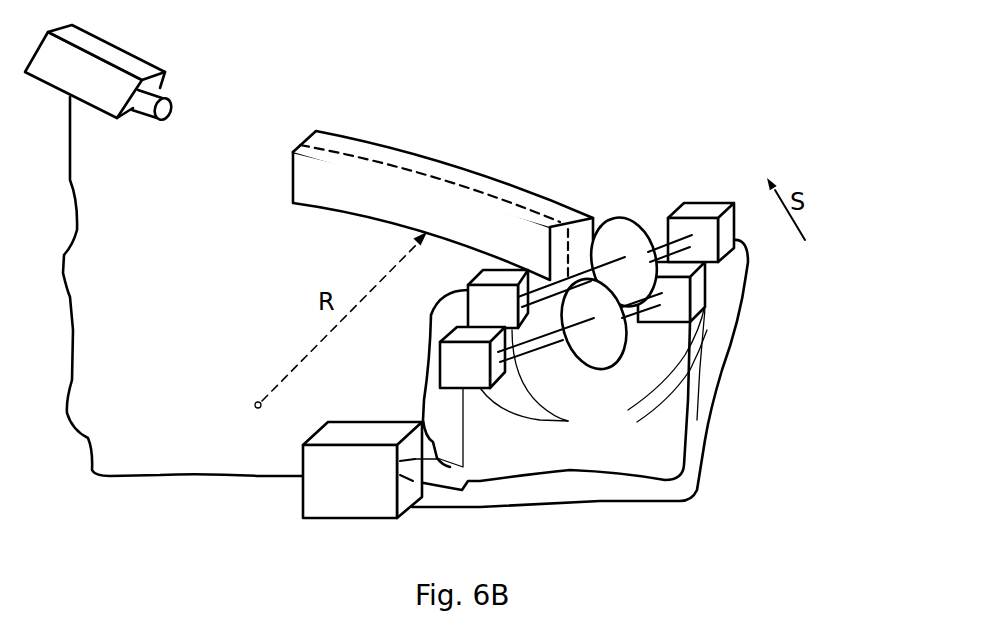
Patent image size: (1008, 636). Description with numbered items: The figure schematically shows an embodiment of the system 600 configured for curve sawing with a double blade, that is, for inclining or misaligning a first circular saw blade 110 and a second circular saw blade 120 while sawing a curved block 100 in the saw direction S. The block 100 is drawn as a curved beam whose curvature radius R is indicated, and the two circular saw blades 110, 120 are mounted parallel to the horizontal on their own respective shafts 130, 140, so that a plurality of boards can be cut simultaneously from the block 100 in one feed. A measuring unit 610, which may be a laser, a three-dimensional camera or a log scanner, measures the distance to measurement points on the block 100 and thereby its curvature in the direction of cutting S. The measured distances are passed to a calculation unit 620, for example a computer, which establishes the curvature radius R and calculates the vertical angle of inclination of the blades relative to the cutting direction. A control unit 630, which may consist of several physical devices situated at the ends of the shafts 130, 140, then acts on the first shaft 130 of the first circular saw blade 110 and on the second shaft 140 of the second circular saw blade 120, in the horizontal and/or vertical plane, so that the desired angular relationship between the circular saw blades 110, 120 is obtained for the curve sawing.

The block 100 is at (493, 172).
The first circular saw blade 110 is at (608, 353).
The second circular saw blade 120 is at (623, 227).
The first shaft 130 is at (533, 340).
The second shaft 140 is at (708, 287).
The system 600 is at (851, 77).
The measuring unit 610 is at (110, 55).
The calculation unit 620 is at (375, 497).
The control unit 630 is at (593, 371).